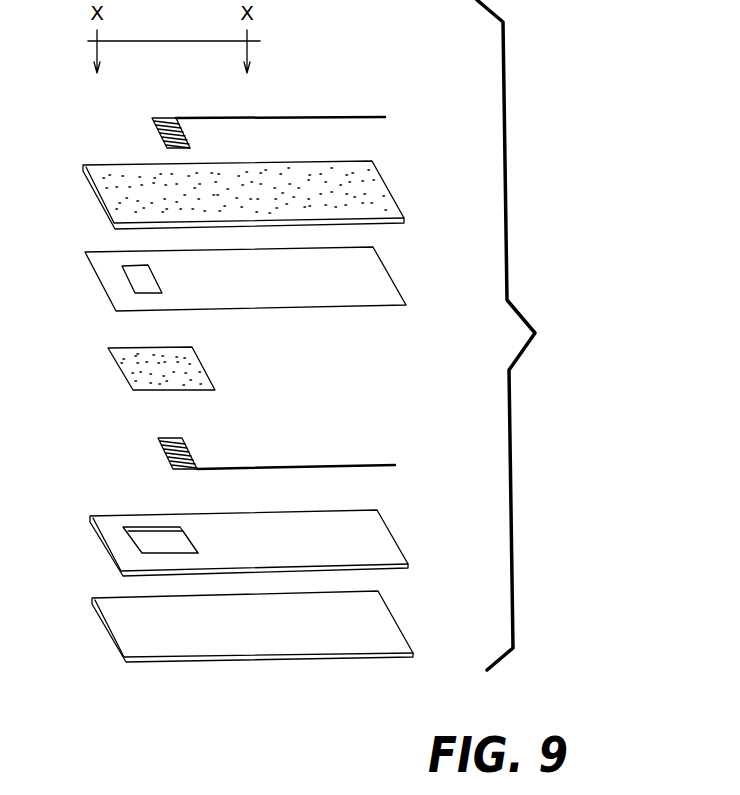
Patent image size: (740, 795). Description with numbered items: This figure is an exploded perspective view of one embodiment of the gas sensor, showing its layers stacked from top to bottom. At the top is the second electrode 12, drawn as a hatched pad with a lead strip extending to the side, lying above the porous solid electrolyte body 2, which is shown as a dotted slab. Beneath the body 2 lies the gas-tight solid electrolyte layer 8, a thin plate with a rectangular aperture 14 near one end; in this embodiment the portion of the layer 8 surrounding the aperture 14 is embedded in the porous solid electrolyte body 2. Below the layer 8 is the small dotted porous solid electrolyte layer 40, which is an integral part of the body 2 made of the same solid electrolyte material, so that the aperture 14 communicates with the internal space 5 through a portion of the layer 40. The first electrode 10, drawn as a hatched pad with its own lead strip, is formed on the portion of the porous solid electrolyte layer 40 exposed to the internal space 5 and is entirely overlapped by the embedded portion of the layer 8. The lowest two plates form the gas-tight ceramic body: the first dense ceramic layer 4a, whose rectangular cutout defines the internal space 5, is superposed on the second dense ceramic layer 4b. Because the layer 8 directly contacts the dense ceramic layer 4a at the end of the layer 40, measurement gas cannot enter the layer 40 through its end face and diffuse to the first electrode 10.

The second electrode 12 is at (152, 127).
The porous solid electrolyte body 2 is at (373, 201).
The gas-tight solid electrolyte layer 8 is at (375, 284).
The aperture 14 is at (135, 276).
The porous solid electrolyte layer 40 is at (130, 365).
The first electrode 10 is at (163, 447).
The first dense ceramic layer 4a is at (385, 546).
The internal space 5 is at (138, 538).
The second dense ceramic layer 4b is at (390, 643).